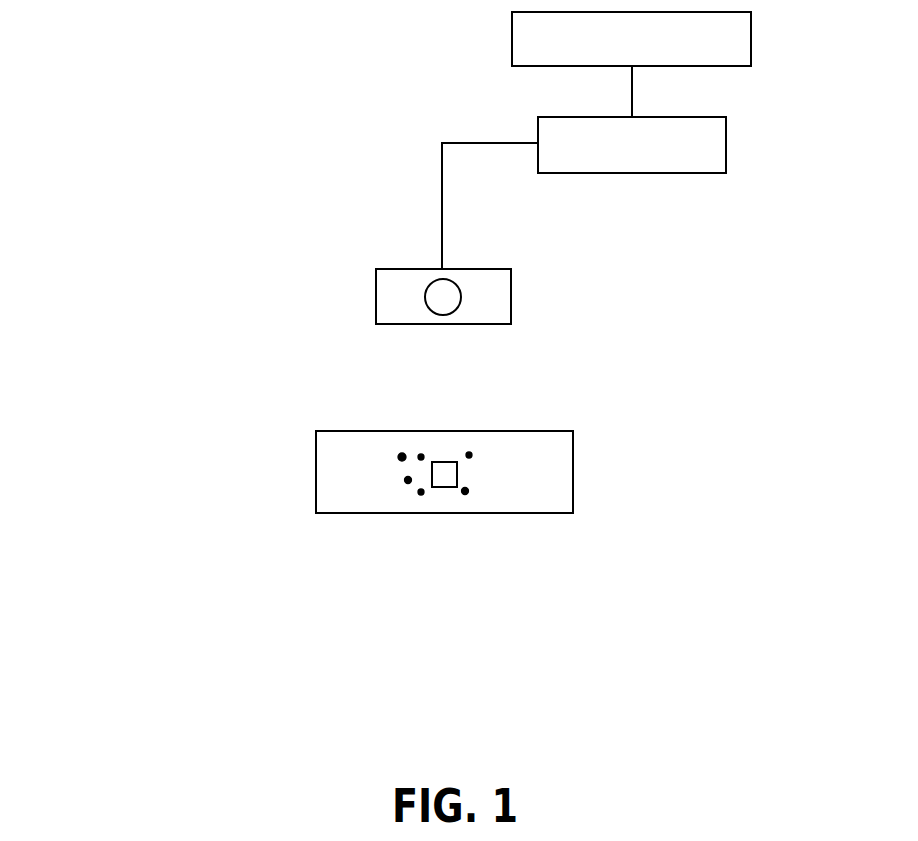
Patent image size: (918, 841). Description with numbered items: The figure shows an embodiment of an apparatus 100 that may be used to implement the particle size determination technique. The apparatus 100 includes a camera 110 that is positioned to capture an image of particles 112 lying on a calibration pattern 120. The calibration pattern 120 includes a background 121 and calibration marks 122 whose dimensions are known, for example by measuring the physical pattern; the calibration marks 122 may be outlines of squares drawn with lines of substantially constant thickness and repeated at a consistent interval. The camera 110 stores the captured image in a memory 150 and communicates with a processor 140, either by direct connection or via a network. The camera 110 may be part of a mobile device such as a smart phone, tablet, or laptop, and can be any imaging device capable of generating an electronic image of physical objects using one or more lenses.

The apparatus 100 is at (197, 138).
The camera 110 is at (407, 283).
The particles 112 is at (400, 460).
The calibration pattern 120 is at (427, 513).
The background 121 is at (328, 463).
The calibration marks 122 is at (442, 470).
The processor 140 is at (752, 40).
The memory 150 is at (726, 136).